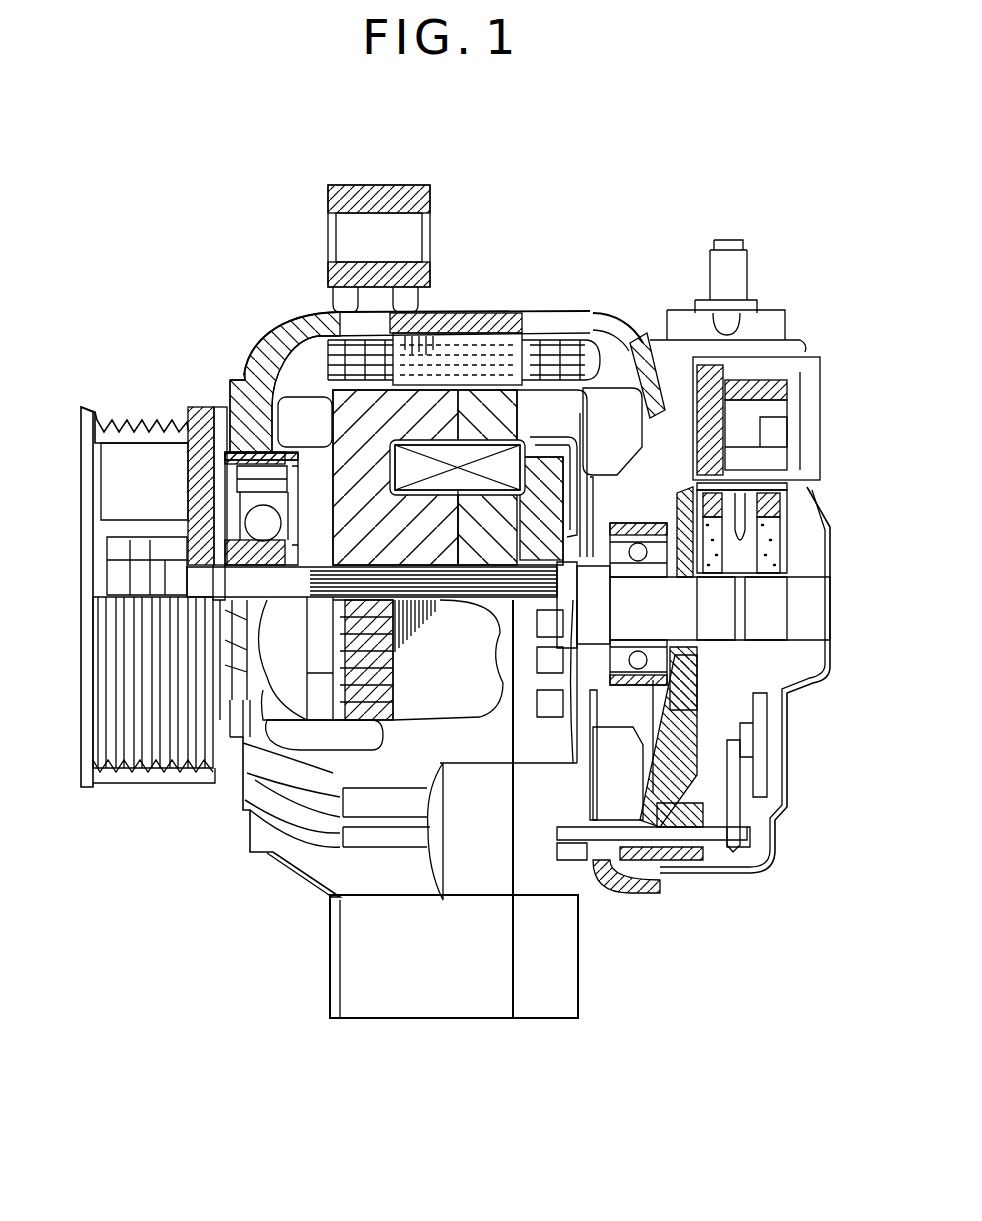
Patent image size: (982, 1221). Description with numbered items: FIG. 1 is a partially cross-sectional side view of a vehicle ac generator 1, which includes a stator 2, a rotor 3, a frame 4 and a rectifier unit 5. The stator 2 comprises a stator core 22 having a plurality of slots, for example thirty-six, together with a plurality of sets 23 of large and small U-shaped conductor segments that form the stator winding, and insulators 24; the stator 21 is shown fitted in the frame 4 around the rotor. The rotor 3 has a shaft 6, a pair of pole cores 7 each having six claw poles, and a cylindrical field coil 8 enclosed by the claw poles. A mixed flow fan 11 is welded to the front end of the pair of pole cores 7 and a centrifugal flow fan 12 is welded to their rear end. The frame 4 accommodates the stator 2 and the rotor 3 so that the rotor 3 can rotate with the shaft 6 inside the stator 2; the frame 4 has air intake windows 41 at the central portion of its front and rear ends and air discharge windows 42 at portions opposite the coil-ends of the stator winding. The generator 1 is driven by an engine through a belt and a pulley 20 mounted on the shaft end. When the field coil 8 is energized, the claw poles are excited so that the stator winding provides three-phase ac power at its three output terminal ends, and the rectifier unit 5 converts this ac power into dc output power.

The vehicle ac generator 1 is at (621, 177).
The stator 2 is at (592, 408).
The rotor 3 is at (262, 400).
The frame 4 is at (458, 450).
The rectifier unit 5 is at (770, 733).
The shaft 6 is at (190, 535).
The pole cores 7 is at (283, 375).
The field coil 8 is at (490, 325).
The mixed flow fan 11 is at (240, 415).
The centrifugal flow fan 12 is at (727, 440).
The pulley 20 is at (120, 410).
The stator 21 is at (326, 335).
The stator core 22 is at (444, 335).
The sets of conductor segments 23 is at (592, 335).
The insulators 24 is at (558, 335).
The air intake windows 41 is at (232, 445).
The air discharge windows 42 is at (325, 335).